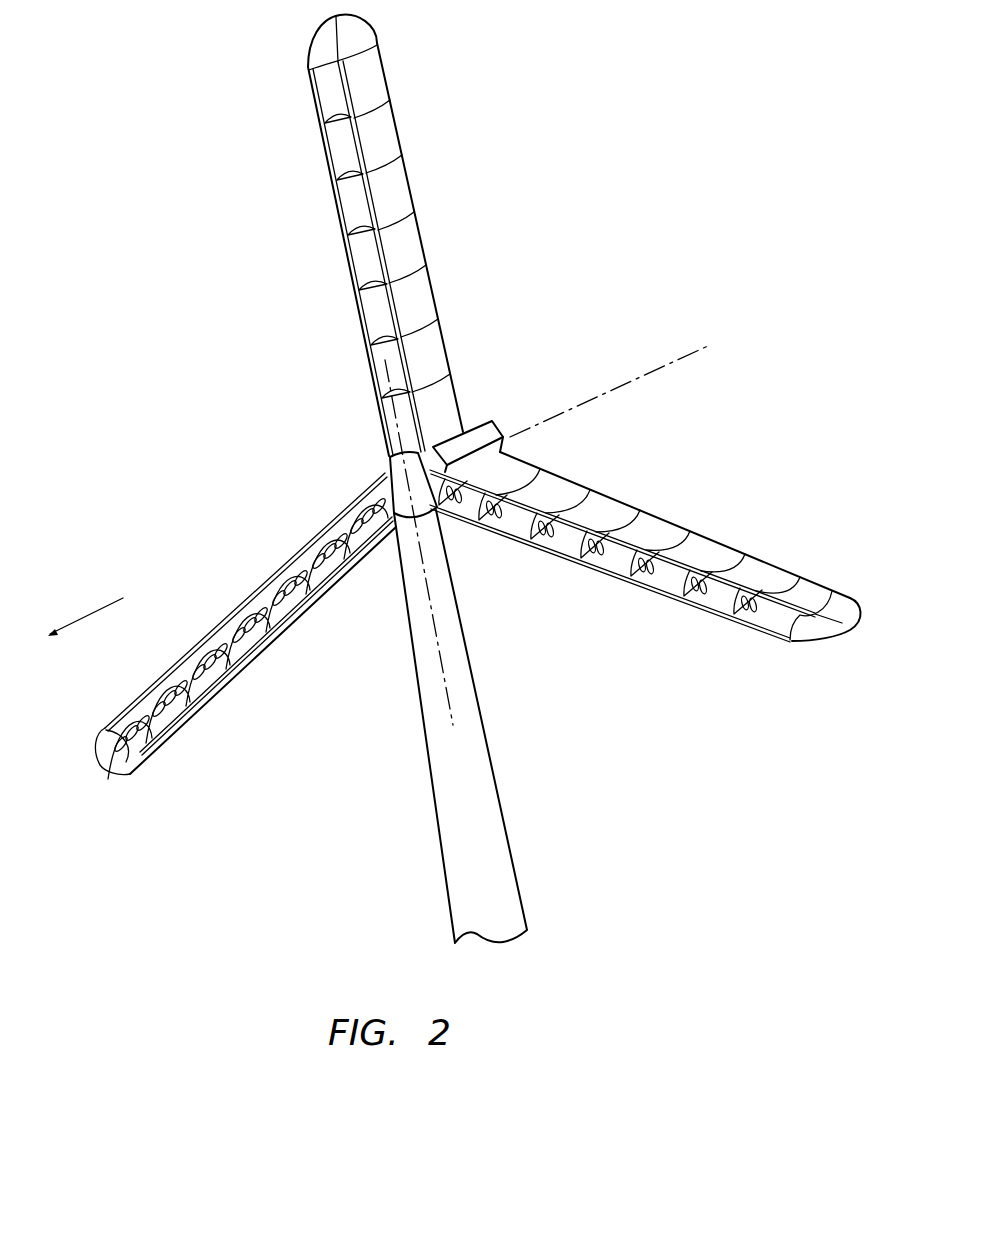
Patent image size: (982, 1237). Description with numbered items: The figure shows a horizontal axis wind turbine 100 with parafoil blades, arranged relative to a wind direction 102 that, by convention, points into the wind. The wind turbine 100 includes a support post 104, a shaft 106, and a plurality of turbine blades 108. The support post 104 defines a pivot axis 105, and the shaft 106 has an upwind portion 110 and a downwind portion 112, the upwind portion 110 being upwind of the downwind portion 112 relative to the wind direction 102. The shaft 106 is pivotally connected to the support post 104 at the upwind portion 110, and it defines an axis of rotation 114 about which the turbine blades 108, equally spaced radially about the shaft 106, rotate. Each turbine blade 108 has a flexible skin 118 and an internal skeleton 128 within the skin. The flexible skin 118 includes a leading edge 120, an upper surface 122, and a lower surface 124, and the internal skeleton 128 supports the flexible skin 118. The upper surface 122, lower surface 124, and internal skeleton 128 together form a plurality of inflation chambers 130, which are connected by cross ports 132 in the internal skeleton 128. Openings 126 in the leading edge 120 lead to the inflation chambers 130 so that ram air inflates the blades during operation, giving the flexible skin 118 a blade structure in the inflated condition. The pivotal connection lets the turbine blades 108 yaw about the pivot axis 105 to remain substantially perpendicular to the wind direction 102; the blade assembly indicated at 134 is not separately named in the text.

The horizontal axis wind turbine 100 is at (183, 253).
The wind direction 102 is at (93, 610).
The support post 104 is at (498, 793).
The pivot axis 105 is at (437, 637).
The shaft 106 is at (497, 424).
The turbine blade 108 is at (400, 123).
The upwind portion 110 is at (383, 470).
The downwind portion 112 is at (470, 422).
The axis of rotation 114 is at (643, 373).
The flexible skin 118 is at (638, 525).
The leading edge 120 is at (760, 630).
The upper surface 122 is at (690, 547).
The lower surface 124 is at (402, 192).
The opening 126 is at (345, 205).
The internal skeleton 128 is at (367, 288).
The inflation chamber 130 is at (327, 150).
The cross port 132 is at (195, 650).
The blade assembly 134 is at (475, 122).